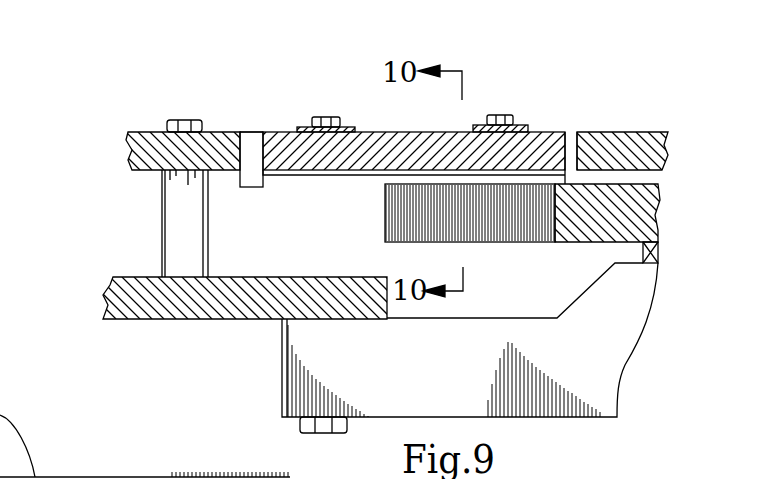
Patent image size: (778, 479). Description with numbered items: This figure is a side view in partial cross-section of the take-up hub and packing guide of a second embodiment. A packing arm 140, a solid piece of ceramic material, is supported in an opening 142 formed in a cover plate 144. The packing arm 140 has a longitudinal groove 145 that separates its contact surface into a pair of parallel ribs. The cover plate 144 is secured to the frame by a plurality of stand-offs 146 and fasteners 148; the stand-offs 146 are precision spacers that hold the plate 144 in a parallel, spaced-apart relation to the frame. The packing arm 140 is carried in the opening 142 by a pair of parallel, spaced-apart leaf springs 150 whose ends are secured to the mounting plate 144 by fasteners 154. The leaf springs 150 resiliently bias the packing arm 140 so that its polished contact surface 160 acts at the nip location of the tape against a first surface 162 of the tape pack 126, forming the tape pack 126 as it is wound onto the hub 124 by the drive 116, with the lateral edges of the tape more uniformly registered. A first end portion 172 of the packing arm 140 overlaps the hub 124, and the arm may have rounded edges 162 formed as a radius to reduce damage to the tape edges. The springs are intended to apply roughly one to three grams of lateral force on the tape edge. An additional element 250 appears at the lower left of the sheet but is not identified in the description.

The drive 116 is at (517, 418).
The hub 124 is at (660, 254).
The tape pack 126 is at (385, 242).
The packing arm 140 is at (330, 172).
The opening 142 is at (245, 112).
The cover plate 144 is at (128, 140).
The longitudinal groove 145 is at (281, 188).
The stand-offs 146 is at (182, 224).
The fasteners 148 is at (184, 118).
The leaf springs 150 is at (350, 127).
The fasteners 154 is at (328, 115).
The polished contact surface 160 is at (372, 176).
The first surface 162 is at (498, 187).
The first end portion 172 is at (553, 148).
The base plate 250 is at (130, 477).